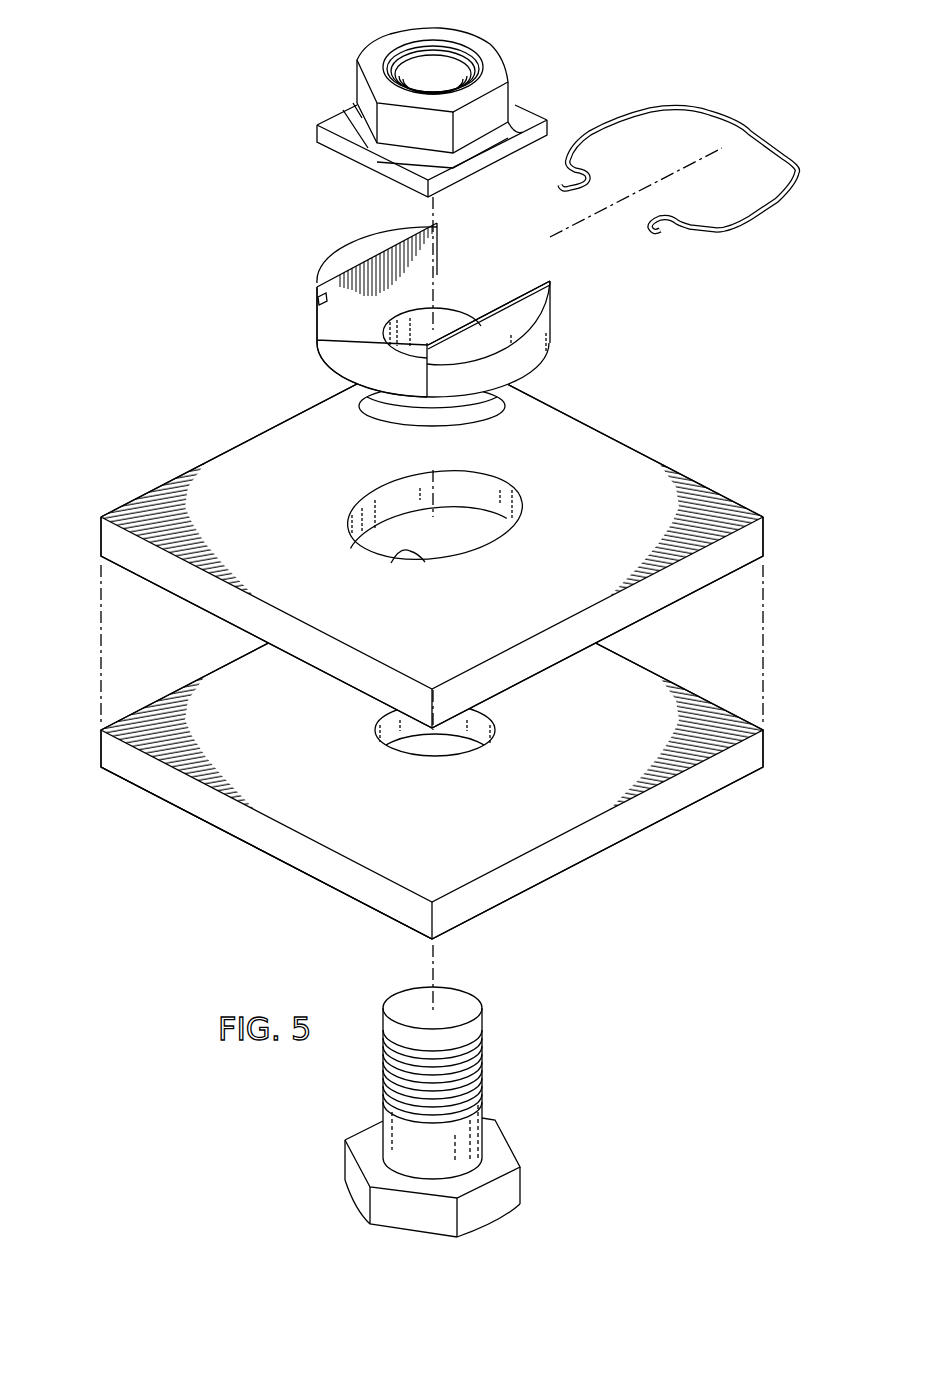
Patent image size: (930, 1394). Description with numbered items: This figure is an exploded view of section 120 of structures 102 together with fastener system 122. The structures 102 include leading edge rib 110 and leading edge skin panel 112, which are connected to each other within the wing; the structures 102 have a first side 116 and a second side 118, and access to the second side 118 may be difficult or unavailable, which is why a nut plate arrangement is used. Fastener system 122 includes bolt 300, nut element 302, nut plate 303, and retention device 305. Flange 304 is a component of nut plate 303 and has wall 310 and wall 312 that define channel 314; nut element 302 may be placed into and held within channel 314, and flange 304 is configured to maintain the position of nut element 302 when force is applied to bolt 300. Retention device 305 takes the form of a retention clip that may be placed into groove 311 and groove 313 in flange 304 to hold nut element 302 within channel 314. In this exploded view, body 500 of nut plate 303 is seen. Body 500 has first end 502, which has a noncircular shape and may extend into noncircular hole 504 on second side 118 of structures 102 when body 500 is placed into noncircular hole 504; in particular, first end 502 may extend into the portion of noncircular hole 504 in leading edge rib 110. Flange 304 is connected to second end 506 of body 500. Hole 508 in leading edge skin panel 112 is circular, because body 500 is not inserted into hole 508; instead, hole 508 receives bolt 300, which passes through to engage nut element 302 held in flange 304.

The structures 102 is at (438, 642).
The leading edge rib 110 is at (399, 536).
The leading edge skin panel 112 is at (471, 748).
The first side 116 is at (270, 837).
The second side 118 is at (618, 441).
The section 120 is at (231, 430).
The fastener system 122 is at (434, 111).
The bolt 300 is at (520, 1185).
The nut element 302 is at (507, 88).
The nut plate 303 is at (341, 289).
The flange 304 is at (471, 336).
The retention device 305 is at (740, 140).
The wall 310 is at (317, 332).
The groove 311 is at (318, 300).
The wall 312 is at (550, 288).
The groove 313 is at (552, 310).
The channel 314 is at (398, 380).
The body 500 is at (473, 405).
The first end 502 is at (458, 418).
The noncircular hole 504 is at (397, 561).
The second end 506 is at (421, 407).
The hole 508 is at (373, 734).